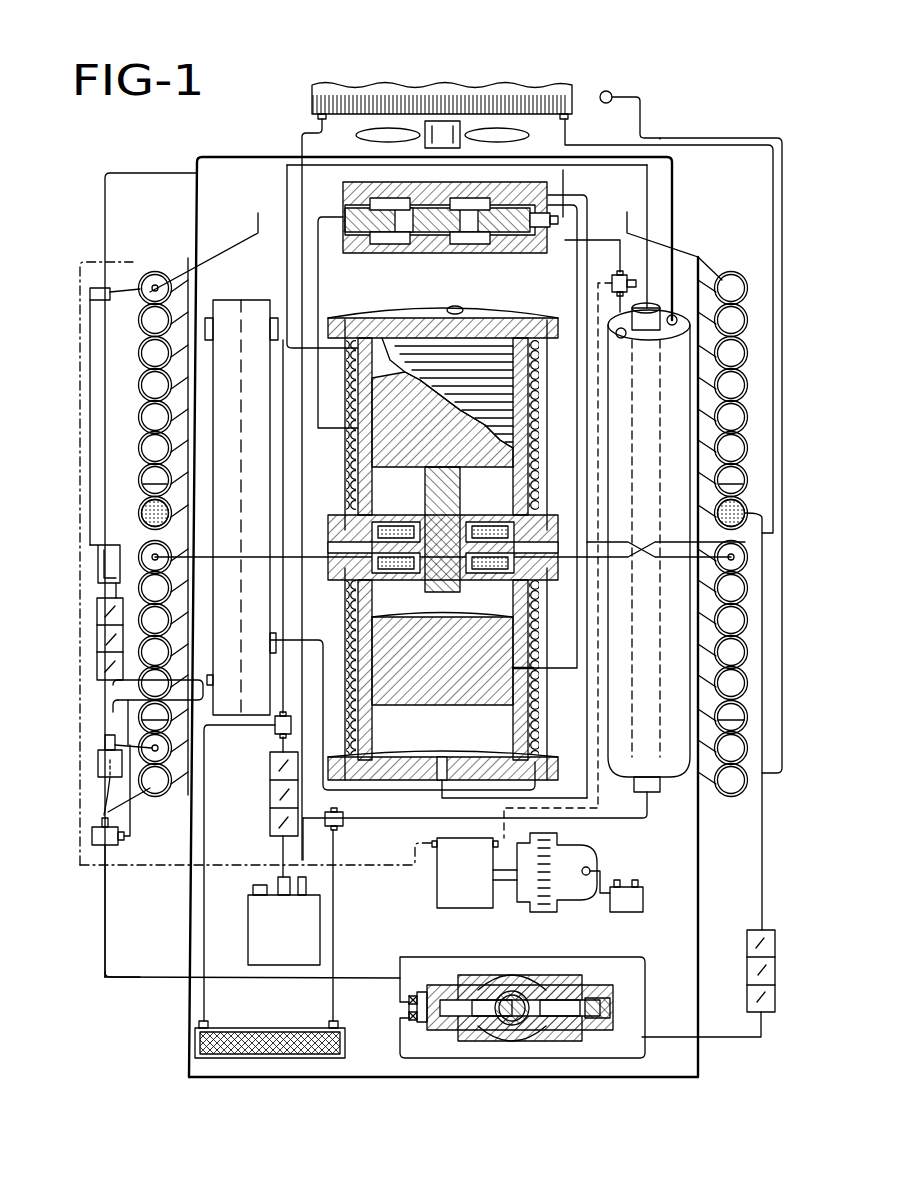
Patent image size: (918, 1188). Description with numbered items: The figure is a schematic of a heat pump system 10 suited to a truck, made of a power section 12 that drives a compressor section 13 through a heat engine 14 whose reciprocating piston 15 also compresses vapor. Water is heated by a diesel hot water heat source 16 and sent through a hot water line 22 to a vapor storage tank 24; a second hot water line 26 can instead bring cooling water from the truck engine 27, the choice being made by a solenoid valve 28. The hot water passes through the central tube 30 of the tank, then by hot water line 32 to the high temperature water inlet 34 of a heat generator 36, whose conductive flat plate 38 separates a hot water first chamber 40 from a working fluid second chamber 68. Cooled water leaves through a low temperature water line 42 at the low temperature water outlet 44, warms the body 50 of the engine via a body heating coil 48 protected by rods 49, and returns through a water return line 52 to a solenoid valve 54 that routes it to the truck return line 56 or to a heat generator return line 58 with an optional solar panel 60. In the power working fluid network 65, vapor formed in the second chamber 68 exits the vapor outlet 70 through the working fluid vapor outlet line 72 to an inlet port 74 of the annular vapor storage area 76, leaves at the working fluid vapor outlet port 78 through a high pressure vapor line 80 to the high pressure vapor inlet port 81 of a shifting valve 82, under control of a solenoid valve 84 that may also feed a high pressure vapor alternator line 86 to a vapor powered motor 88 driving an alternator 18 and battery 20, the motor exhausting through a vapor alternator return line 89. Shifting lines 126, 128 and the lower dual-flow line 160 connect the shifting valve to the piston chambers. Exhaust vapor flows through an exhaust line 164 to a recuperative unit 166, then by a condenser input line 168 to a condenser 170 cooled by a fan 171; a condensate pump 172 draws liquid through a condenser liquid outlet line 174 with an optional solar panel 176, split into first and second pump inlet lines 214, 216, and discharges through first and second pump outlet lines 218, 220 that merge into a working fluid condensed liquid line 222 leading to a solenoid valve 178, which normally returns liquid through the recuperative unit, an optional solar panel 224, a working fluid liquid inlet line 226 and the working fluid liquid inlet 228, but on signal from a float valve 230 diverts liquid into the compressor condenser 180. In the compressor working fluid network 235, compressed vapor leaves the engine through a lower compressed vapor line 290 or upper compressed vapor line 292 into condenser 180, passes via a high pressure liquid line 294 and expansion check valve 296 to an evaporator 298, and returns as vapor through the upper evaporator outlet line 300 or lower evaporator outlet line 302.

The heat pump system 10 is at (756, 1055).
The power section 12 is at (78, 935).
The compressor section 13 is at (622, 53).
The heat engine 14 is at (378, 302).
The piston 15 is at (432, 557).
The hot water heat source 16 is at (246, 938).
The alternator 18 is at (600, 856).
The battery 20 is at (630, 905).
The hot water line 22 is at (395, 825).
The vapor storage tank 24 is at (690, 777).
The second hot water line 26 is at (333, 998).
The truck engine 27 is at (205, 1043).
The solenoid valve 28 is at (343, 815).
The central tube 30 is at (650, 790).
The hot water line 32 is at (646, 220).
The high temperature water inlet 34 is at (275, 300).
The heat generator 36 is at (232, 300).
The flat plate 38 is at (240, 422).
The first chamber 40 is at (250, 535).
The low temperature water line 42 is at (283, 642).
The low temperature water outlet 44 is at (276, 655).
The body heating coil 48 is at (530, 668).
The rods 49 is at (340, 450).
The body 50 is at (522, 733).
The water return line 52 is at (300, 447).
The solenoid valve 54 is at (291, 722).
The truck return line 56 is at (213, 830).
The heat generator return line 58 is at (272, 755).
The solar panel 60 is at (270, 832).
The power working fluid network 65 is at (580, 183).
The second chamber 68 is at (225, 495).
The vapor outlet 70 is at (208, 340).
The working fluid vapor outlet line 72 is at (197, 222).
The inlet port 74 is at (674, 318).
The vapor storage area 76 is at (672, 432).
The working fluid vapor outlet port 78 is at (624, 337).
The high pressure vapor line 80 is at (618, 272).
The high pressure vapor inlet port 81 is at (545, 190).
The shifting valve 82 is at (455, 258).
The solenoid valve 84 is at (626, 283).
The high pressure vapor alternator line 86 is at (598, 740).
The vapor powered motor 88 is at (452, 886).
The vapor alternator return line 89 is at (355, 873).
The shifting line 126 is at (320, 292).
The shifting line 128 is at (578, 620).
The lower dual-flow line 160 is at (490, 798).
The exhaust line 164 is at (120, 172).
The recuperative unit 166 is at (105, 570).
The condenser input line 168 is at (62, 298).
The condenser 170 is at (155, 450).
The fan 171 is at (385, 130).
The condensate pump 172 is at (545, 972).
The condenser liquid outlet line 174 is at (762, 860).
The solar panel 176 is at (766, 970).
The solenoid valve 178 is at (92, 838).
The condenser 180 is at (731, 650).
The first pump inlet line 214 is at (455, 1060).
The second pump inlet line 216 is at (647, 1030).
The first pump outlet line 218 is at (400, 990).
The second pump outlet line 220 is at (640, 958).
The working fluid condensed liquid line 222 is at (140, 978).
The solar panel 224 is at (108, 668).
The working fluid liquid inlet line 226 is at (110, 695).
The working fluid liquid inlet 228 is at (115, 680).
The float valve 230 is at (100, 752).
The compressor working fluid network 235 is at (668, 112).
The lower compressed vapor line 290 is at (195, 556).
The upper compressed vapor line 292 is at (677, 562).
The high pressure liquid line 294 is at (783, 748).
The expansion check valve 296 is at (612, 95).
The evaporator 298 is at (325, 88).
The upper evaporator outlet line 300 is at (302, 145).
The lower evaporator outlet line 302 is at (568, 132).